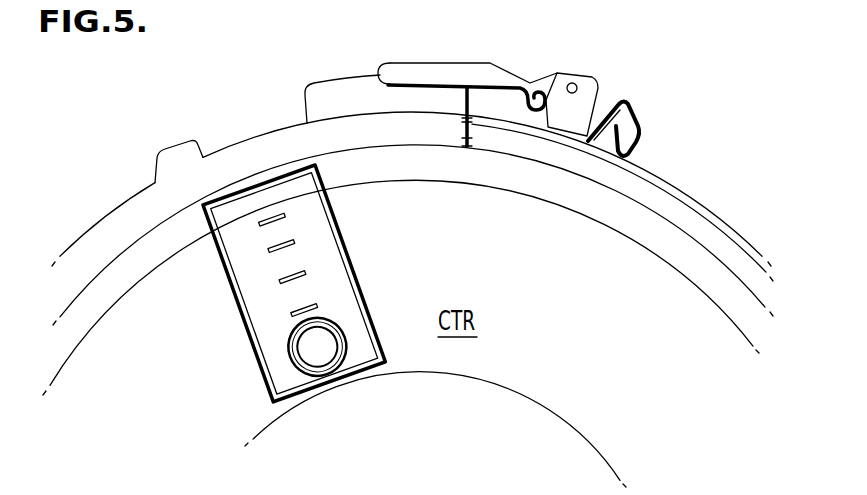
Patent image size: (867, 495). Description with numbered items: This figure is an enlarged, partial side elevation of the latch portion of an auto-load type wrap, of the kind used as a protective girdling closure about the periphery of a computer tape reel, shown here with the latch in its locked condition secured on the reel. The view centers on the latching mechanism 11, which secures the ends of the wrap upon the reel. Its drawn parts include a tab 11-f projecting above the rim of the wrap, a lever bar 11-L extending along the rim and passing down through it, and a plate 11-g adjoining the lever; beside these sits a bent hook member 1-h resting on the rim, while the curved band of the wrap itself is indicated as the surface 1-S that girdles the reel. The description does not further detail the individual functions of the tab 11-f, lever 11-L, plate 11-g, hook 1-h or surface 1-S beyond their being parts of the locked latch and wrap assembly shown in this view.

The latching mechanism 11 is at (680, 62).
The tab 11-f is at (315, 110).
The latch lever 11-L is at (410, 73).
The latch plate 11-g is at (567, 81).
The hook 1-h is at (638, 128).
The rim surface 1-S is at (683, 260).